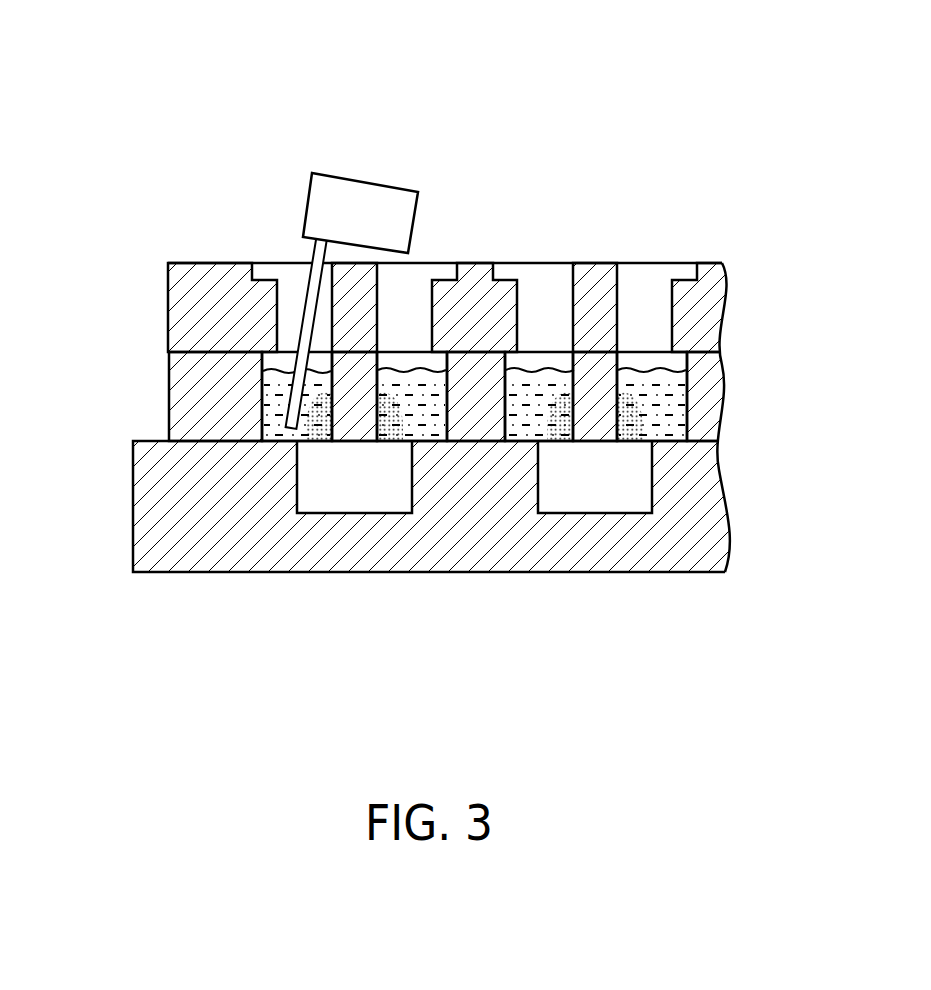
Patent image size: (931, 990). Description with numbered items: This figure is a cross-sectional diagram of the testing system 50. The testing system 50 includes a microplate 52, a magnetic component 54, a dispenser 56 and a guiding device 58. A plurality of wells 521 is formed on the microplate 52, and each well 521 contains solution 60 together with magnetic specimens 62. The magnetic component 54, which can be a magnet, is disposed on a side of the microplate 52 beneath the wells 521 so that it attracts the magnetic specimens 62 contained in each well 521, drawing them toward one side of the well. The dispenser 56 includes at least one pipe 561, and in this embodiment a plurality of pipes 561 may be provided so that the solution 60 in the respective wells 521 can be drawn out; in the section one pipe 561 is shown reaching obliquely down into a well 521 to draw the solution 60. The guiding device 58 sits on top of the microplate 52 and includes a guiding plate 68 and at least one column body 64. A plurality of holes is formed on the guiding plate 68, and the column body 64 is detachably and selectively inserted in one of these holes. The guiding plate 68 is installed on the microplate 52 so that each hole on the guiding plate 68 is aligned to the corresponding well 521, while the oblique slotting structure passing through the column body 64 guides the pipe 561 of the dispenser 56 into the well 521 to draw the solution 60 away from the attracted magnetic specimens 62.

The testing system 50 is at (662, 80).
The microplate 52 is at (160, 405).
The well 521 is at (258, 387).
The magnetic component 54 is at (357, 488).
The dispenser 56 is at (358, 290).
The pipe 561 is at (320, 256).
The guiding device 58 is at (220, 202).
The solution 60 is at (292, 440).
The magnetic specimens 62 is at (322, 442).
The column body 64 is at (270, 262).
The guiding plate 68 is at (160, 302).